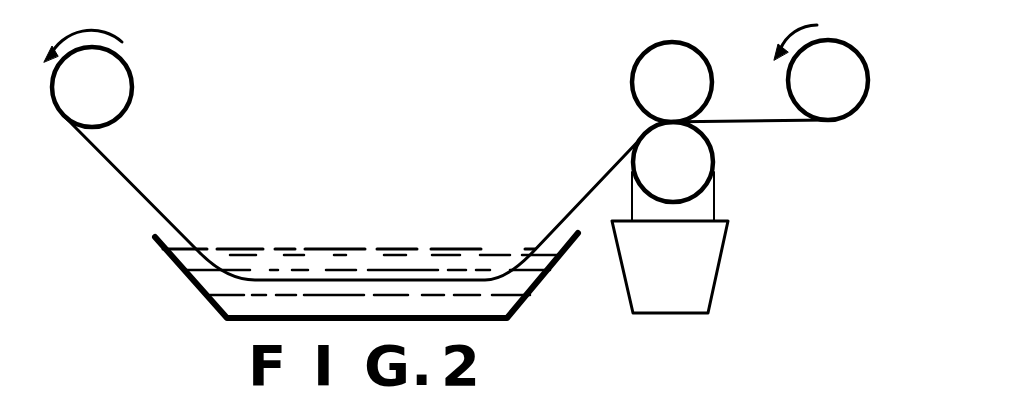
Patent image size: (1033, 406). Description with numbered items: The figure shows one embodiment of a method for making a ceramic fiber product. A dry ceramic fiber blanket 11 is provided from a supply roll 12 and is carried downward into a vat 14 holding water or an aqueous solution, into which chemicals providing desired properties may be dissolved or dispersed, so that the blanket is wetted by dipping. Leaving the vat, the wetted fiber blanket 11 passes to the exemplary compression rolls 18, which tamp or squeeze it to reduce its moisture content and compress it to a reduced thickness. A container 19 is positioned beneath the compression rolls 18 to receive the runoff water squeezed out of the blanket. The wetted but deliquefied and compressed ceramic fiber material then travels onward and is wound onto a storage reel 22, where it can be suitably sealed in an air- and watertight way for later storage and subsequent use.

The dry ceramic fiber blanket 11 is at (140, 184).
The supply roll 12 is at (133, 91).
The vat 14 is at (190, 282).
The compression rolls 18 is at (684, 44).
The container 19 is at (722, 283).
The storage reel 22 is at (858, 50).